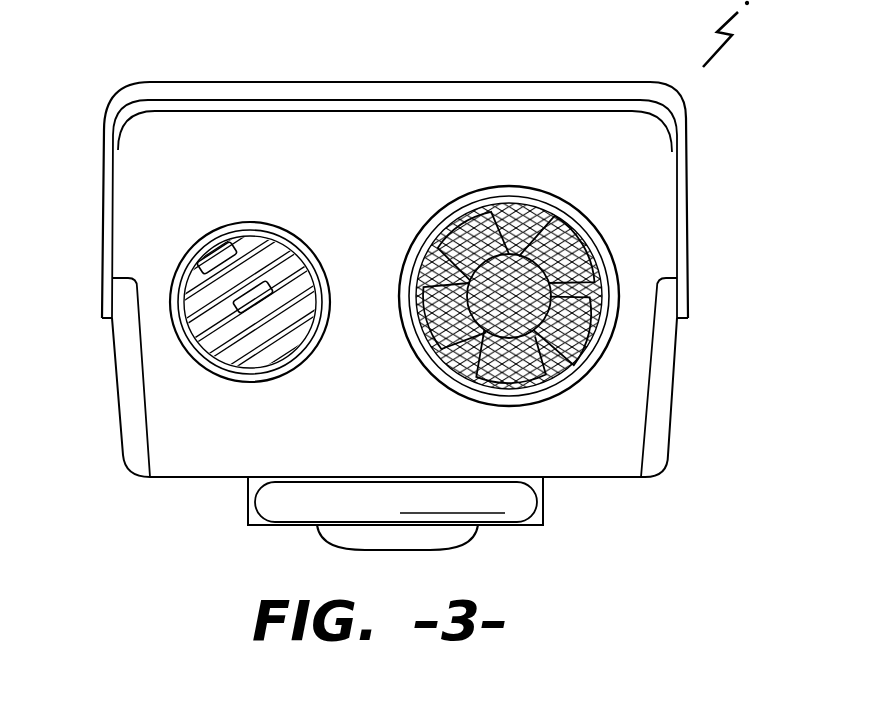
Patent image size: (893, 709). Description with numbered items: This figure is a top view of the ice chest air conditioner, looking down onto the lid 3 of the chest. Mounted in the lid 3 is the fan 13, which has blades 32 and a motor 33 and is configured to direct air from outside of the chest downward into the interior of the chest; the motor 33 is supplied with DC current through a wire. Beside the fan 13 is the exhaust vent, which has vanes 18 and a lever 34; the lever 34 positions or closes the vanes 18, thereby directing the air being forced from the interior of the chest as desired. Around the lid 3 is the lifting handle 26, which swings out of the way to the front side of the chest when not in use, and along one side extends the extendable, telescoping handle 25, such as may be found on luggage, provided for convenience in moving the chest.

The lid 3 is at (322, 130).
The lifting handle 26 is at (485, 80).
The fan 13 is at (575, 316).
The lever 34 is at (212, 258).
The vanes 18 is at (187, 290).
The motor 33 is at (517, 387).
The blades 32 is at (530, 393).
The telescoping handle 25 is at (520, 498).